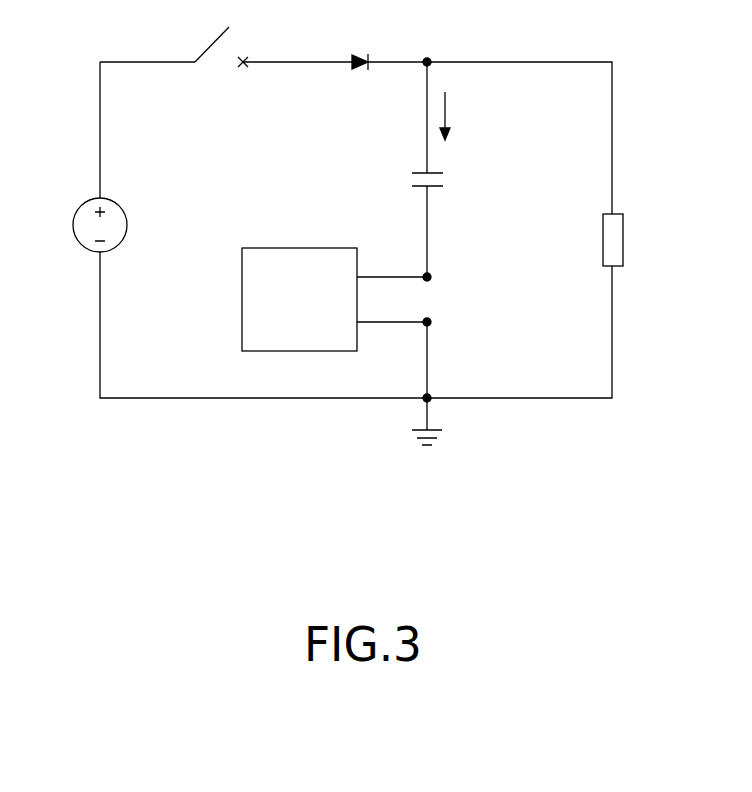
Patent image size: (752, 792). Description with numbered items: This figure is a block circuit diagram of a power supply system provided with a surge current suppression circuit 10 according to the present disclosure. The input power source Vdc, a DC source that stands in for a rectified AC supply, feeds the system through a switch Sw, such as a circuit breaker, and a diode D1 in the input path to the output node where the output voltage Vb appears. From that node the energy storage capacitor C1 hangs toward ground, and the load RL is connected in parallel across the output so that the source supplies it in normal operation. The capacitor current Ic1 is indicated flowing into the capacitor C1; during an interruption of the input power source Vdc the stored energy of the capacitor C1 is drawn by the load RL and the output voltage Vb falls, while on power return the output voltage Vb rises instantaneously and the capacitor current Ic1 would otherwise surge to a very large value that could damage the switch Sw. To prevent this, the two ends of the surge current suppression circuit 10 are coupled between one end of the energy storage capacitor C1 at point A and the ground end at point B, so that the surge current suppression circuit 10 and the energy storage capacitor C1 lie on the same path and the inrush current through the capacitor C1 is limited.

The surge current suppression circuit 10 is at (285, 267).
The switch Sw is at (211, 40).
The diode D1 is at (357, 46).
The output voltage Vb is at (429, 44).
The energy storage capacitor C1 is at (445, 169).
The capacitor current Ic1 is at (462, 116).
The input power source Vdc is at (79, 225).
The load RL is at (628, 252).
The point A is at (408, 276).
The point B is at (408, 353).